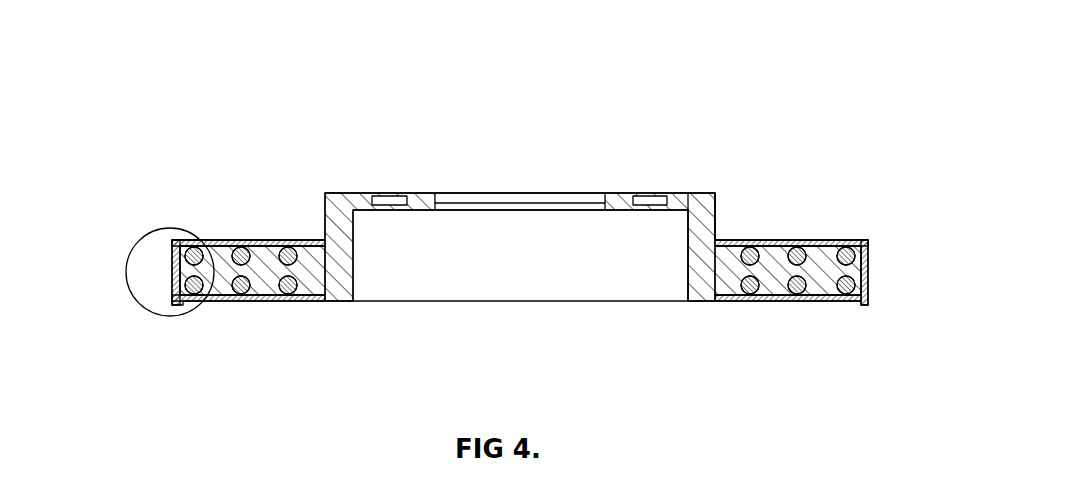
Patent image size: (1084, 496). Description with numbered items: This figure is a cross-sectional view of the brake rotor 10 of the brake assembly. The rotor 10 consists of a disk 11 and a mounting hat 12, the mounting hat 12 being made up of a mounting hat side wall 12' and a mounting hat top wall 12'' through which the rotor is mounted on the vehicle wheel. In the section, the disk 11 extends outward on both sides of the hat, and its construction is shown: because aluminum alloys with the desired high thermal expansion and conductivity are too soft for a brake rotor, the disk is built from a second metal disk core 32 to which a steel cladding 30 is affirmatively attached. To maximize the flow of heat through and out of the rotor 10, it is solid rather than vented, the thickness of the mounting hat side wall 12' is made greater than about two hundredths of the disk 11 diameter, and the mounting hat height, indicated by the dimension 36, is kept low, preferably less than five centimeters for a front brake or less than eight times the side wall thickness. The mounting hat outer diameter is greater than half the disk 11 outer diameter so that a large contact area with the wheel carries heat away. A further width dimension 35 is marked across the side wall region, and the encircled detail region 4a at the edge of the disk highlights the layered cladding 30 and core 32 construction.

The brake rotor 10 is at (310, 126).
The disk 11 is at (213, 225).
The mounting hat 12 is at (520, 201).
The mounting hat side wall 12' is at (734, 229).
The mounting hat top wall 12'' is at (520, 155).
The steel cladding 30 is at (240, 242).
The second metal disk core 32 is at (200, 296).
The width dimension 35 is at (702, 173).
The height of rotor mounting hat 36 is at (320, 193).
The detail region 4a is at (141, 234).